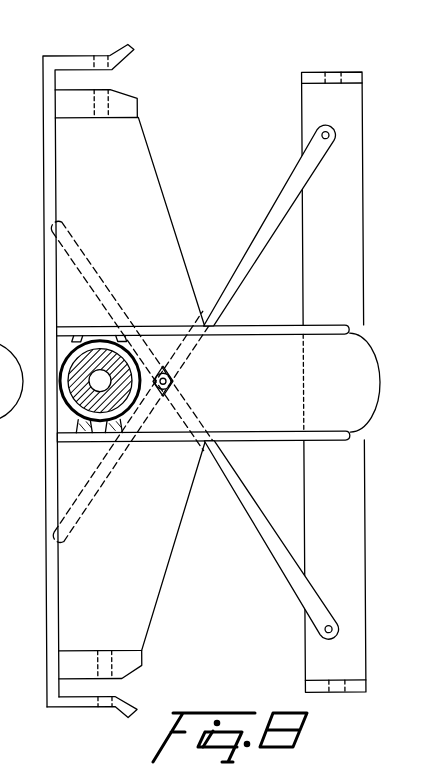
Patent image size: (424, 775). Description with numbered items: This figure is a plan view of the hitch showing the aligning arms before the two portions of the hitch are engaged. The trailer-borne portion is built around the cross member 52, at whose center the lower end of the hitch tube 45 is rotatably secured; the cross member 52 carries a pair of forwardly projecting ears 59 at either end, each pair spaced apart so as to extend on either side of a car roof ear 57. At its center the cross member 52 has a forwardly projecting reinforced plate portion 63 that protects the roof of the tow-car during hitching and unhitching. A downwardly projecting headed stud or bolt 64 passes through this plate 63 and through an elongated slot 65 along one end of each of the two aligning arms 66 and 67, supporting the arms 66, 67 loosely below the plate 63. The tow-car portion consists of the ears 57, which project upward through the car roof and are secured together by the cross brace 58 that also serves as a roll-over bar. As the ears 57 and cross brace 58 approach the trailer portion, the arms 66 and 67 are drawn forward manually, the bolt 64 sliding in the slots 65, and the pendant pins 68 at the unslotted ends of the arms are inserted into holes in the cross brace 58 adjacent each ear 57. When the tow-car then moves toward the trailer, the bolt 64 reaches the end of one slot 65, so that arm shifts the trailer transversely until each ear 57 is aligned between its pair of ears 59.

The hitch tube 45 is at (80, 397).
The cross member 52 is at (150, 190).
The ear 57 is at (365, 66).
The cross-brace 58 is at (350, 524).
The forwardly projecting ears 59 is at (124, 106).
The reinforced plate portion 63 is at (263, 387).
The headed stud or bolt 64 is at (170, 368).
The elongated slot 65 is at (114, 292).
The aligning arm 66 is at (289, 177).
The aligning arm 67 is at (267, 553).
The pendant pins 68 is at (337, 138).